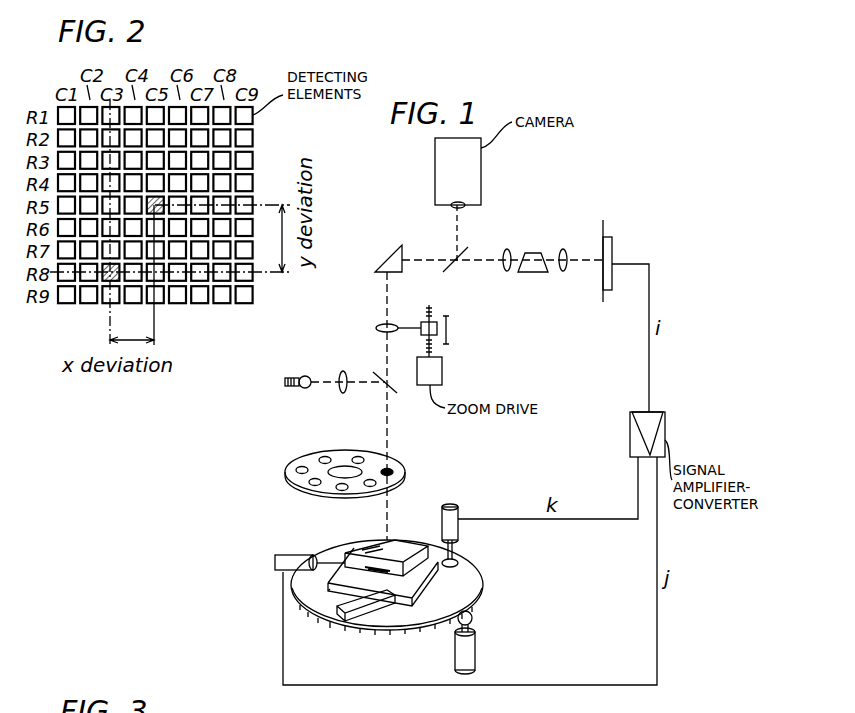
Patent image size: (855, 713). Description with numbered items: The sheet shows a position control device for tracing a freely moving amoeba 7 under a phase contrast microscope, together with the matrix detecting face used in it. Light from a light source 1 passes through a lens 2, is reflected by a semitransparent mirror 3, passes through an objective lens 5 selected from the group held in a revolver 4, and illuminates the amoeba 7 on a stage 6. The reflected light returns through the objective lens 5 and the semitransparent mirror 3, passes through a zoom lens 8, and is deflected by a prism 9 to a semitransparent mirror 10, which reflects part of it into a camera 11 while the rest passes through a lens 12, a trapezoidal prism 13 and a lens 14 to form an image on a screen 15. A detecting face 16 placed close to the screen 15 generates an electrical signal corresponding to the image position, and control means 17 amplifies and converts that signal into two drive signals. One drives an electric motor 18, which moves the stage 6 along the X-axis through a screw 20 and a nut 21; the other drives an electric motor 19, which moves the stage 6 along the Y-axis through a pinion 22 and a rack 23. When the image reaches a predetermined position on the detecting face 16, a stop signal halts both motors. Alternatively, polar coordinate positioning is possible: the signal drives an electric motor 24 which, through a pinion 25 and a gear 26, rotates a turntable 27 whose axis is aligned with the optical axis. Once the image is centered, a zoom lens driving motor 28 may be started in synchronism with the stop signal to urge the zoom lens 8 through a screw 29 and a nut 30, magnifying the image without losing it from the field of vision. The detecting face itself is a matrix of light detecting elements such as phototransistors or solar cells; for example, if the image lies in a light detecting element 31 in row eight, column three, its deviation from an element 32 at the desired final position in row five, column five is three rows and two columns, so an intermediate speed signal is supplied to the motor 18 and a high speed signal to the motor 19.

In FIG. 1, the light source 1 is at (288, 387).
In FIG. 1, the lens 2 is at (346, 390).
In FIG. 1, the semitransparent mirror 3 is at (395, 388).
In FIG. 1, the revolver 4 is at (284, 475).
In FIG. 1, the objective lens 5 is at (393, 470).
In FIG. 1, the stage 6 is at (405, 545).
In FIG. 1, the amoeba 7 is at (380, 546).
In FIG. 1, the zoom lens 8 is at (384, 324).
In FIG. 1, the prism 9 is at (377, 268).
In FIG. 1, the semitransparent mirror 10 is at (455, 265).
In FIG. 1, the camera 11 is at (482, 160).
In FIG. 1, the lens 12 is at (508, 248).
In FIG. 1, the trapezoidal prism 13 is at (531, 272).
In FIG. 1, the lens 14 is at (565, 249).
In FIG. 1, the screen 15 is at (603, 294).
In FIG. 1, the detecting face 16 is at (612, 242).
In FIG. 1, the control means 17 is at (630, 440).
In FIG. 1, the electric motor 18 is at (275, 560).
In FIG. 1, the electric motor 19 is at (460, 528).
In FIG. 1, the screw 20 is at (327, 562).
In FIG. 1, the nut 21 is at (330, 589).
In FIG. 1, the pinion 22 is at (460, 565).
In FIG. 1, the rack 23 is at (438, 580).
In FIG. 1, the electric motor 24 is at (476, 656).
In FIG. 1, the pinion 25 is at (473, 619).
In FIG. 1, the gear 26 is at (420, 632).
In FIG. 1, the turntable 27 is at (380, 623).
In FIG. 1, the zoom lens driving motor 28 is at (440, 370).
In FIG. 1, the screw 29 is at (437, 312).
In FIG. 1, the nut 30 is at (447, 330).
In FIG. 2, the light detecting element 31 is at (100, 297).
In FIG. 2, the element 32 is at (160, 214).